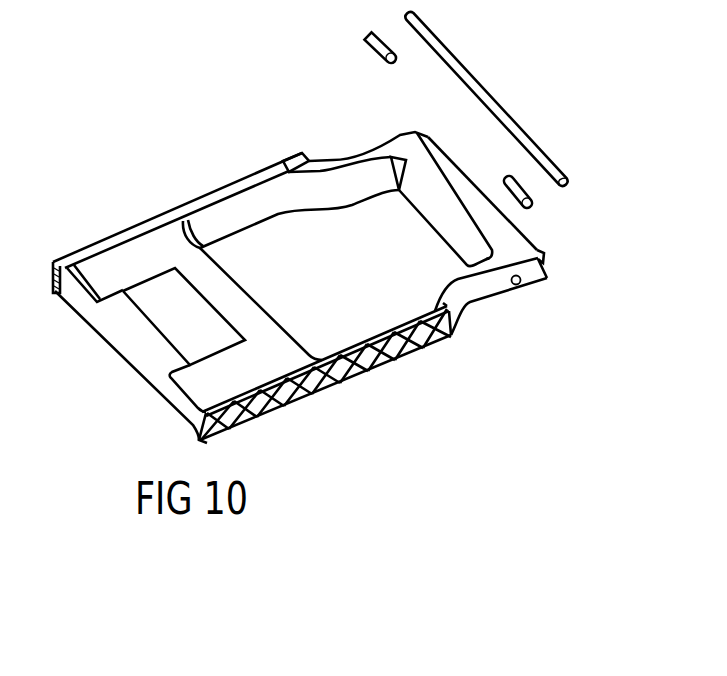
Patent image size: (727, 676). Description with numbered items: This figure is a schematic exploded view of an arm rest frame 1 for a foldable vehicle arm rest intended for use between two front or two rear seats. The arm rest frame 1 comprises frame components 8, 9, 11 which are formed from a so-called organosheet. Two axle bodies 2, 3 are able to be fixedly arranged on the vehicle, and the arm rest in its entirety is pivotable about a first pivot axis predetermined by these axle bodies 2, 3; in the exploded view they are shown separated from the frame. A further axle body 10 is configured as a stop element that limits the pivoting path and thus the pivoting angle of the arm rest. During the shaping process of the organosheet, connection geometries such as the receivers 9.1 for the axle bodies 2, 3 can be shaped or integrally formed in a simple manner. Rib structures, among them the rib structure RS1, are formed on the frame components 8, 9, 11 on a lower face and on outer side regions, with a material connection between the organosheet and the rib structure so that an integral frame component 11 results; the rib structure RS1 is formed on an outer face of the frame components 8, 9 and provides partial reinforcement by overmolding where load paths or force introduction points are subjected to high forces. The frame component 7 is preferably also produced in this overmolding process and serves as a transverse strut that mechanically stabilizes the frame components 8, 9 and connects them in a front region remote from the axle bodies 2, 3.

The arm rest frame 1 is at (334, 287).
The axle body 2 is at (531, 206).
The axle body 3 is at (362, 42).
The frame component 7 is at (137, 343).
The frame component 8 is at (214, 218).
The frame component 9 is at (331, 382).
The receiver 9.1 is at (528, 289).
The axle body 10 is at (512, 118).
The frame component 11 is at (323, 230).
The rib structure RS1 is at (378, 370).